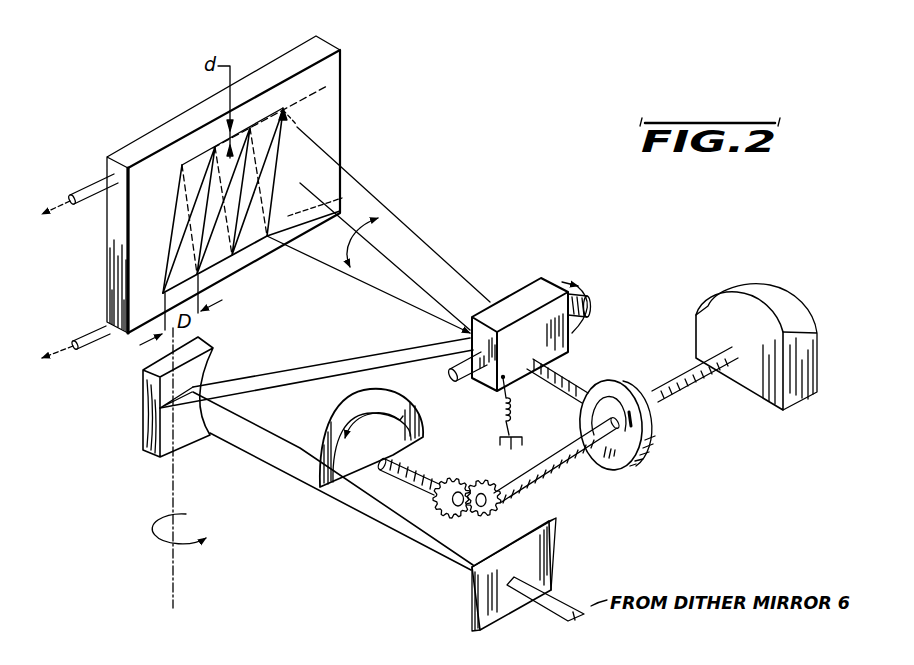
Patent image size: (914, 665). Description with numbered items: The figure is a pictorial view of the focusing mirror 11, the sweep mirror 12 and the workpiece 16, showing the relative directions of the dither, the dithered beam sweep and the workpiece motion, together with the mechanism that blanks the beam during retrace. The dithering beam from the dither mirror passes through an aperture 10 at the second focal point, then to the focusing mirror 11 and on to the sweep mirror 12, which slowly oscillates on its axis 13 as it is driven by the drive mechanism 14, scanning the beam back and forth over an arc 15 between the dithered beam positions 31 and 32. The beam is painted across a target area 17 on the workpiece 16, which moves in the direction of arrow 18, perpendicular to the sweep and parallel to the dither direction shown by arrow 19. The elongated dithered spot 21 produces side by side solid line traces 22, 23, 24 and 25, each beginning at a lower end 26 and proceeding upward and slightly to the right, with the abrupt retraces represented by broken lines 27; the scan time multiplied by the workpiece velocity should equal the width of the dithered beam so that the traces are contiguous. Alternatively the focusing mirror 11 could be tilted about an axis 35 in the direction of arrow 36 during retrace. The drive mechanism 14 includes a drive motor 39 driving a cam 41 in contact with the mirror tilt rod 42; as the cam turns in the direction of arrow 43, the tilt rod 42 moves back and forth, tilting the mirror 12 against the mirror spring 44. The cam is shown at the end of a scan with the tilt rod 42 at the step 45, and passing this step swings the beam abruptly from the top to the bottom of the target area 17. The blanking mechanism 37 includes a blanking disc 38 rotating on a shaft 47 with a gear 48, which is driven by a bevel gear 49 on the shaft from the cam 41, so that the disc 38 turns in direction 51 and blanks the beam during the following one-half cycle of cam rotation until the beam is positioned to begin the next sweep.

The aperture 10 is at (516, 578).
The focusing mirror 11 is at (156, 462).
The sweep mirror 12 is at (543, 276).
The axis 13 is at (590, 296).
The drive mechanism 14 is at (660, 305).
The arc 15 is at (393, 218).
The workpiece 16 is at (343, 48).
The target area 17 is at (312, 90).
The arrow 18 is at (60, 204).
The arrow 19 is at (250, 447).
The elongated spot 21 is at (292, 108).
The solid line trace 22 is at (175, 220).
The solid line trace 23 is at (233, 256).
The solid line trace 24 is at (252, 245).
The solid line trace 25 is at (303, 210).
The lower end of scan 26 is at (331, 325).
The retrace lines 27 is at (182, 163).
The dithered beam position 31 is at (378, 293).
The dithered beam position 32 is at (433, 244).
The axis 35 is at (175, 493).
The arrow 36 is at (203, 548).
The blanking mechanism 37 is at (458, 436).
The blanking disc 38 is at (325, 487).
The drive motor 39 is at (760, 288).
The cam 41 is at (658, 433).
The tilt rod 42 is at (574, 377).
The arrow 43 is at (624, 403).
The mirror spring 44 is at (514, 408).
The step 45 is at (578, 418).
The shaft 47 is at (406, 468).
The gear 48 is at (460, 478).
The bevel gear 49 is at (506, 499).
The direction of rotation 51 is at (388, 432).